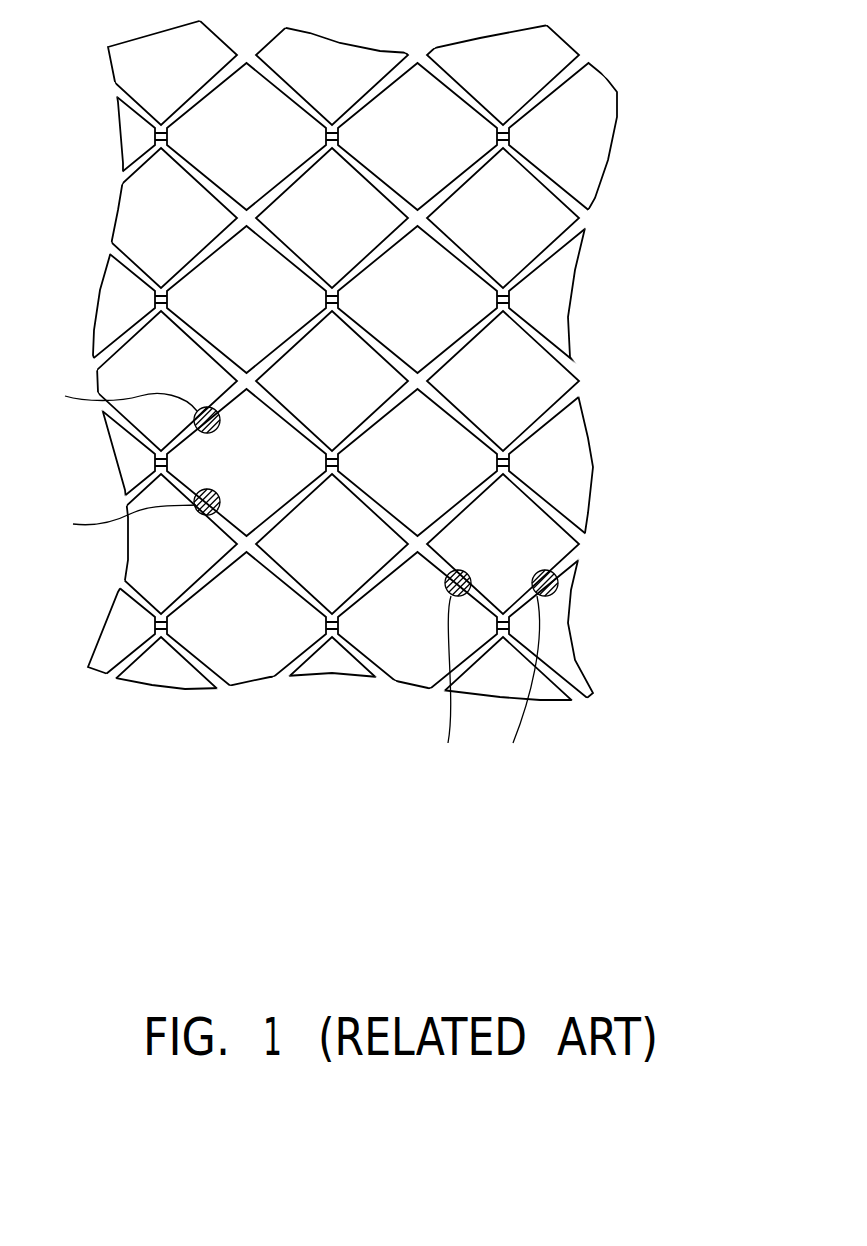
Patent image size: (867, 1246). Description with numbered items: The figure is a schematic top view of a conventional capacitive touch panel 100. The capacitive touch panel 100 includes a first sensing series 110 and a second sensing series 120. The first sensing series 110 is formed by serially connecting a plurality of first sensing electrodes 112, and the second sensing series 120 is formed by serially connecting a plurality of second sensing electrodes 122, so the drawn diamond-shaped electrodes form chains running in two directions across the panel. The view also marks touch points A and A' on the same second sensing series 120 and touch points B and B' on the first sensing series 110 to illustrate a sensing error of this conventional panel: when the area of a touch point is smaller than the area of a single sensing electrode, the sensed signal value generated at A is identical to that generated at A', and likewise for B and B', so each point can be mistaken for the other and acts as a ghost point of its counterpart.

The capacitive touch panel 100 is at (379, 424).
The first sensing series 110 is at (592, 388).
The first sensing electrode 112 is at (512, 410).
The second sensing series 120 is at (334, 691).
The second sensing electrode 122 is at (250, 628).